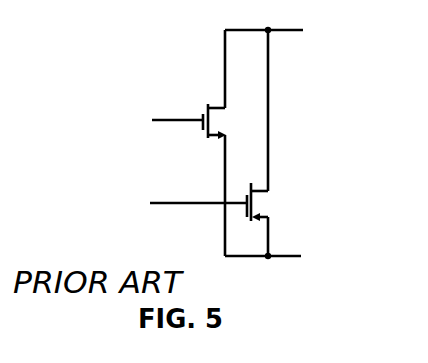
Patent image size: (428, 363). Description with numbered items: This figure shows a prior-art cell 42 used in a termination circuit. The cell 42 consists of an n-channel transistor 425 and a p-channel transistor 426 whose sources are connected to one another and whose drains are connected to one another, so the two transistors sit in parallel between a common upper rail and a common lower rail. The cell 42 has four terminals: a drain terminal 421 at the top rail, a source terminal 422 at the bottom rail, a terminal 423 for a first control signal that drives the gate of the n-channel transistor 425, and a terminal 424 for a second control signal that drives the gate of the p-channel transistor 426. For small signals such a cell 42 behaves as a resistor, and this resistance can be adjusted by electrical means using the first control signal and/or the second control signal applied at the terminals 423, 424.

The cell 42 is at (95, 163).
The drain terminal 421 is at (303, 38).
The source terminal 422 is at (302, 247).
The terminal for first control signal 423 is at (155, 105).
The terminal for second control signal 424 is at (152, 212).
The n-channel transistor 425 is at (210, 92).
The p-channel transistor 426 is at (255, 178).